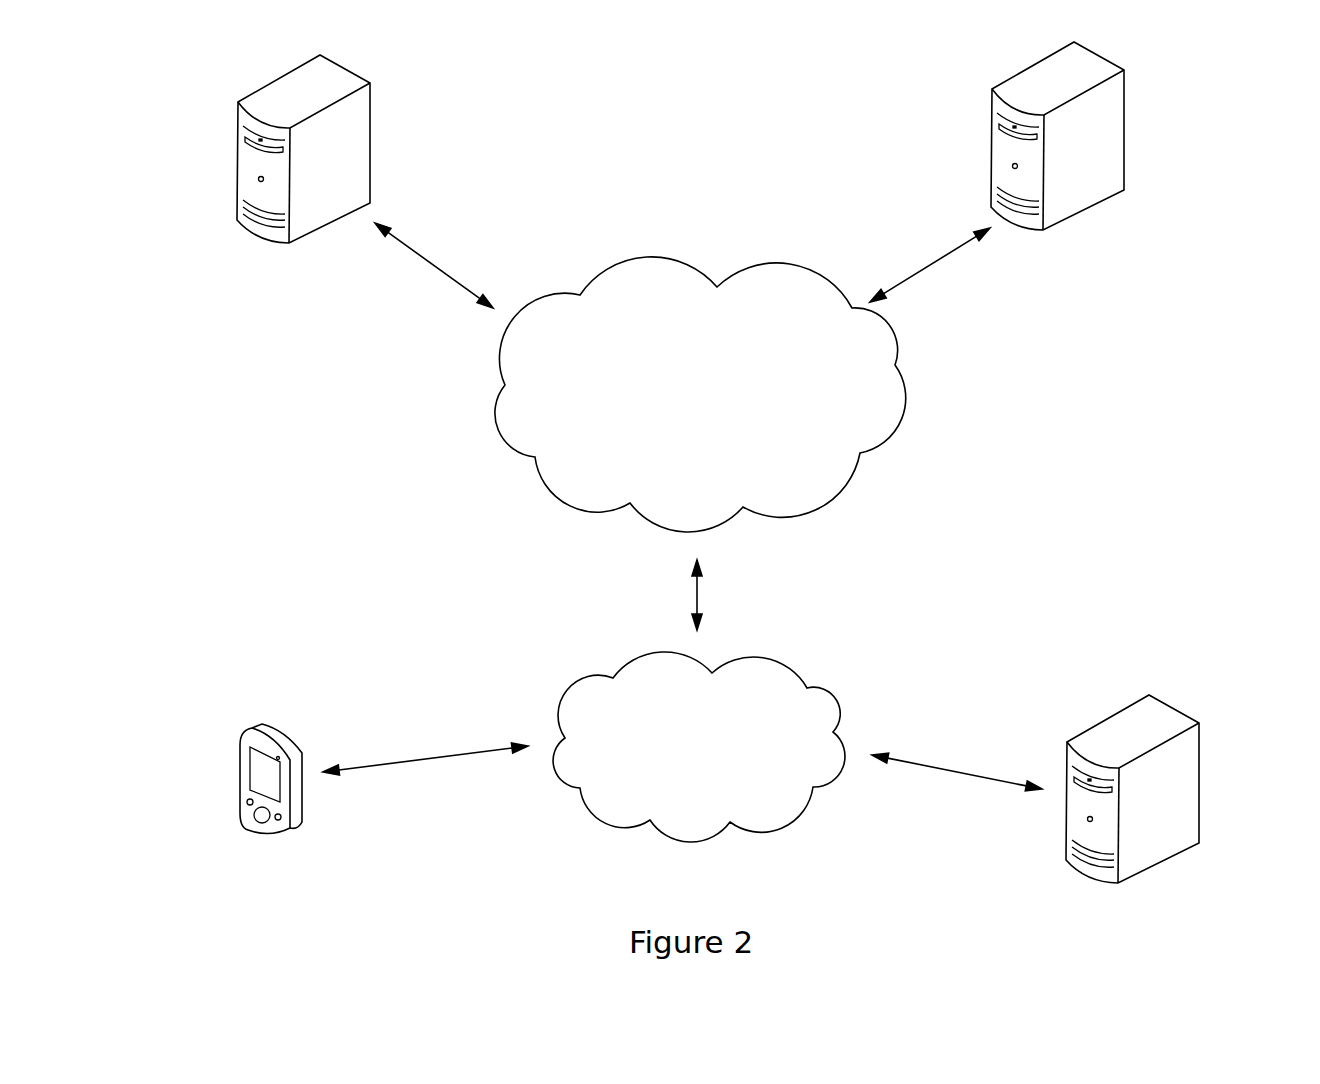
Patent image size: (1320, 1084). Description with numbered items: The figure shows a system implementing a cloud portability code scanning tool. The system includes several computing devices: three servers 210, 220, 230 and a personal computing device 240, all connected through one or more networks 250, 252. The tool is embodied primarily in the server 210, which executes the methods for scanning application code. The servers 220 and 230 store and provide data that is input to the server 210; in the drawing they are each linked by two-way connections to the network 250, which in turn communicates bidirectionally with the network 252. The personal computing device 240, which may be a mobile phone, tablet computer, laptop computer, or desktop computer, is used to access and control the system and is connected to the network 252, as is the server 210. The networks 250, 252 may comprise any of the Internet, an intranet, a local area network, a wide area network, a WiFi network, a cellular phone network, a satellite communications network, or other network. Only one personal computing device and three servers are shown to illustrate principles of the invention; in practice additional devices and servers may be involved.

The server 210 is at (1160, 778).
The server 220 is at (1110, 120).
The server 230 is at (290, 92).
The personal computing device 240 is at (262, 780).
The network 250 is at (700, 394).
The network 252 is at (699, 747).